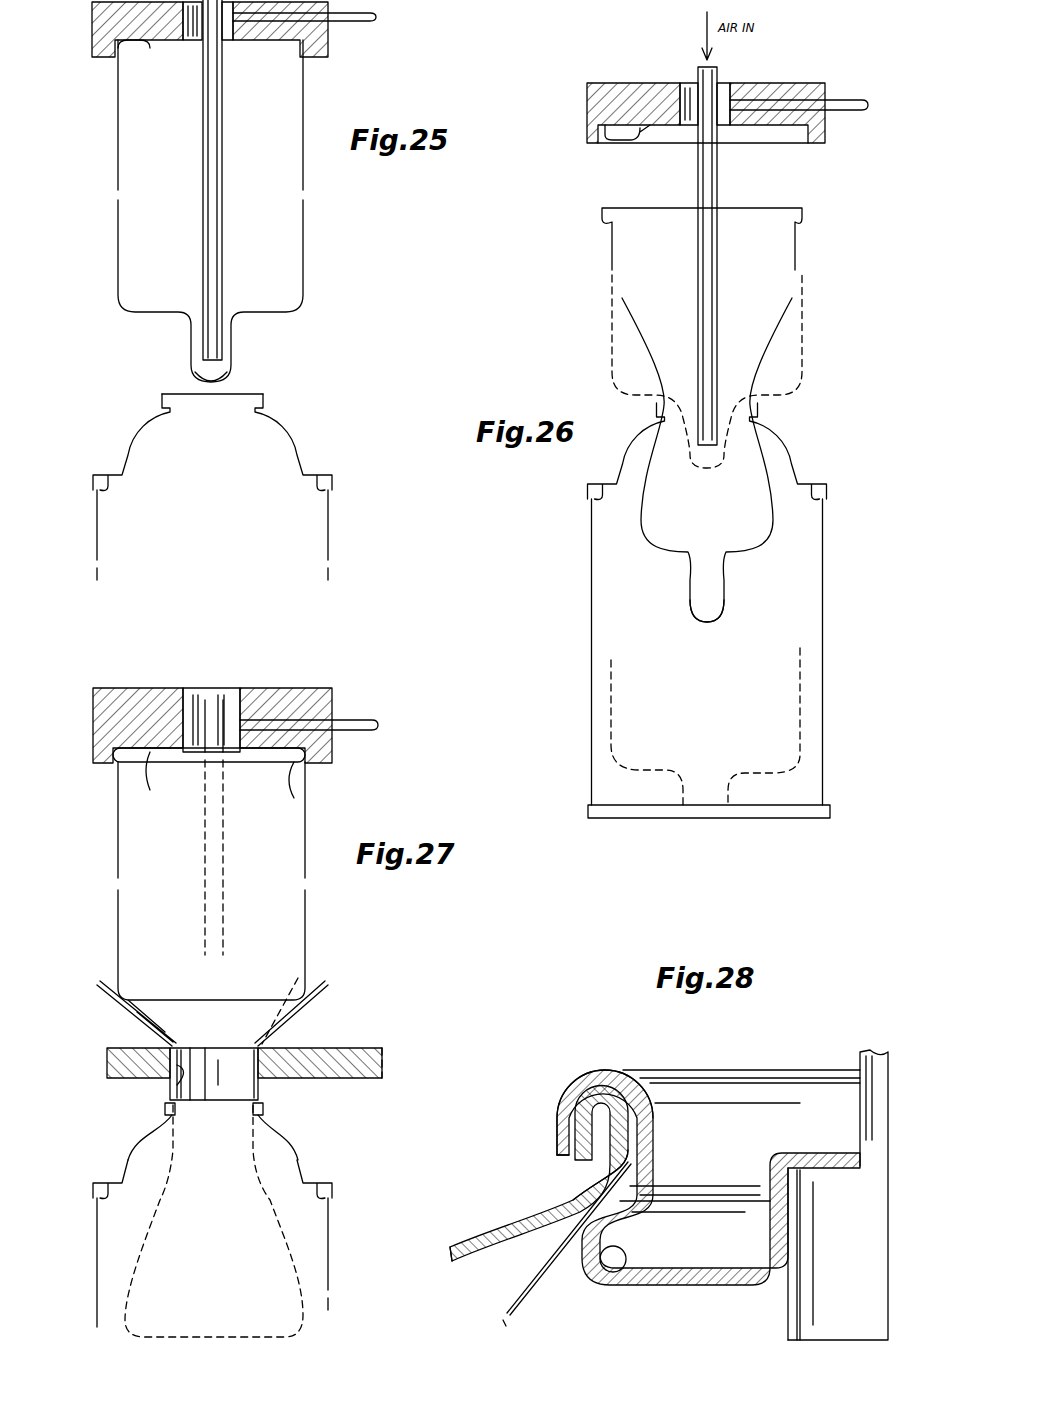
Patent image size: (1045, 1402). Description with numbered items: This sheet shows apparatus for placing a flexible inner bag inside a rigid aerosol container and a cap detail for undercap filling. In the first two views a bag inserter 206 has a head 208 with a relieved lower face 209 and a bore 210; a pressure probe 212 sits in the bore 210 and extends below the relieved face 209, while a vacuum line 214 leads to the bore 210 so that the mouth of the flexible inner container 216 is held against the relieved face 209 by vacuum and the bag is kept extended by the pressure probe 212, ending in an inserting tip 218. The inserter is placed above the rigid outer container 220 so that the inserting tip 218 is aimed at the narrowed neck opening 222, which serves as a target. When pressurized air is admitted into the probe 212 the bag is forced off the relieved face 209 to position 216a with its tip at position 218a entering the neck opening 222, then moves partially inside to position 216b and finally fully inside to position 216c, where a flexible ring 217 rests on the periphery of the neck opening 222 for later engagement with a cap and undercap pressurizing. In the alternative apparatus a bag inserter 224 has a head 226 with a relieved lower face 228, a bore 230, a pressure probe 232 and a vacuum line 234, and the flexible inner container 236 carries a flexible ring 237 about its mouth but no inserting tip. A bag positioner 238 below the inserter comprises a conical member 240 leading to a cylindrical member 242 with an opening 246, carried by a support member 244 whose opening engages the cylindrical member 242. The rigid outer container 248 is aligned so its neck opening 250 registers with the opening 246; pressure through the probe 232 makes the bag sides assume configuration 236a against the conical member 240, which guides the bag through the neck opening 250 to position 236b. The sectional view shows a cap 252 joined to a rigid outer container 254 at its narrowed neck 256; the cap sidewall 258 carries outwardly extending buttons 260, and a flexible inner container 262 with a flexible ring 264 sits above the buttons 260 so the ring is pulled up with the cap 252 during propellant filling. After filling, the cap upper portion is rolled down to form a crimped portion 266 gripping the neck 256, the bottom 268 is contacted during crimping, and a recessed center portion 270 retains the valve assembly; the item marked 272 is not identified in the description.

In FIG. 25, the bag inserter 206 is at (84, 38).
In FIG. 26, the bag inserter 206 is at (580, 118).
In FIG. 25, the head 208 is at (329, 48).
In FIG. 26, the head 208 is at (826, 87).
In FIG. 25, the relieved lower face 209 is at (148, 48).
In FIG. 26, the relieved lower face 209 is at (643, 140).
In FIG. 25, the bore 210 is at (192, 44).
In FIG. 26, the bore 210 is at (689, 95).
In FIG. 25, the pressure probe 212 is at (203, 243).
In FIG. 26, the pressure probe 212 is at (718, 184).
In FIG. 25, the vacuum line 214 is at (374, 20).
In FIG. 26, the vacuum line 214 is at (848, 113).
In FIG. 25, the flexible inner container 216 is at (305, 230).
In FIG. 26, the flexible inner container position 216a is at (806, 344).
In FIG. 26, the flexible inner container position 216b is at (767, 482).
In FIG. 26, the flexible inner container position 216c is at (803, 708).
In FIG. 26, the flexible ring 217 is at (803, 214).
In FIG. 25, the inserting tip 218 is at (229, 350).
In FIG. 26, the inserting tip position 218a is at (691, 558).
In FIG. 25, the rigid outer container 220 is at (329, 526).
In FIG. 26, the rigid outer container 220 is at (824, 544).
In FIG. 25, the narrowed neck opening 222 is at (238, 394).
In FIG. 26, the narrowed neck opening 222 is at (752, 414).
In FIG. 27, the bag inserter 224 is at (355, 707).
In FIG. 27, the head 226 is at (333, 758).
In FIG. 27, the relieved lower face 228 is at (150, 752).
In FIG. 27, the bore 230 is at (232, 697).
In FIG. 27, the pressure probe 232 is at (205, 860).
In FIG. 27, the vacuum line 234 is at (362, 718).
In FIG. 27, the flexible inner container 236 is at (307, 885).
In FIG. 27, the flexible inner container configuration 236a is at (140, 972).
In FIG. 27, the flexible inner container position 236b is at (299, 1260).
In FIG. 27, the flexible ring 237 is at (294, 792).
In FIG. 27, the bag positioner 238 is at (330, 1012).
In FIG. 27, the conical member 240 is at (314, 1000).
In FIG. 27, the cylindrical member 242 is at (168, 1090).
In FIG. 27, the support member 244 is at (366, 1080).
In FIG. 27, the opening 246 is at (264, 1142).
In FIG. 27, the rigid outer container 248 is at (333, 1221).
In FIG. 27, the neck opening 250 is at (162, 1118).
In FIG. 28, the cap 252 is at (768, 1065).
In FIG. 28, the rigid outer container 254 is at (490, 1246).
In FIG. 28, the narrowed neck 256 is at (570, 1160).
In FIG. 28, the sidewall 258 is at (655, 1188).
In FIG. 28, the buttons 260 is at (622, 1222).
In FIG. 28, the flexible inner container 262 is at (536, 1284).
In FIG. 28, the flexible ring 264 is at (608, 1086).
In FIG. 28, the crimped portion 266 is at (560, 1118).
In FIG. 28, the bottom 268 is at (726, 1263).
In FIG. 28, the center portion 270 is at (812, 1156).
In FIG. 28, the rolled edge 272 is at (620, 1286).